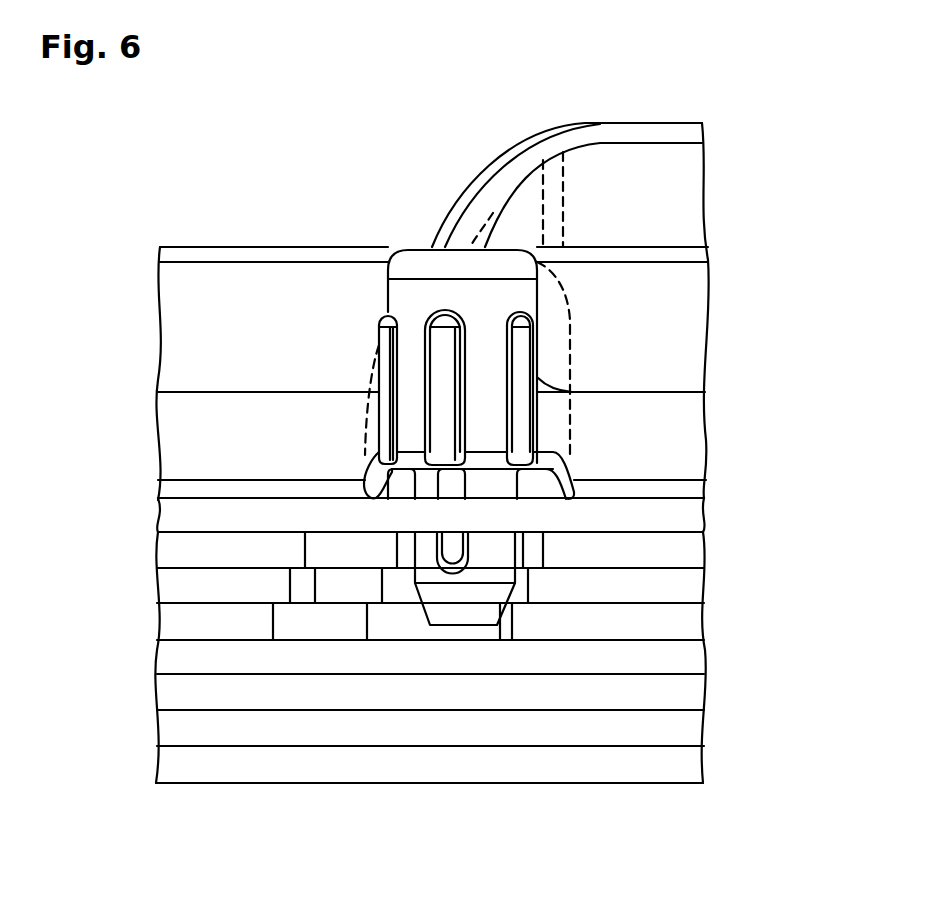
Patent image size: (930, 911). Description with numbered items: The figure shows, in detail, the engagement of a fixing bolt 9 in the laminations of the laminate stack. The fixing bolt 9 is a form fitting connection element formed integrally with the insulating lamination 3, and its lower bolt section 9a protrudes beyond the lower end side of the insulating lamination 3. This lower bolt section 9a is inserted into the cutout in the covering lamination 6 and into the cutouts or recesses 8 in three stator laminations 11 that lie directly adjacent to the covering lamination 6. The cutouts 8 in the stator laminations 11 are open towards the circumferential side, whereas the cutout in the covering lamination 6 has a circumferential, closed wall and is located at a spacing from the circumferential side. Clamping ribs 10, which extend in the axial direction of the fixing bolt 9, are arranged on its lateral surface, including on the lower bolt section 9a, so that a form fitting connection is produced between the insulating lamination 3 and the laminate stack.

The insulating lamination 3 is at (237, 253).
The covering lamination 6 is at (182, 511).
The cutouts or recesses 8 is at (403, 621).
The fixing bolt 9 is at (374, 305).
The lower bolt section 9a is at (503, 293).
The clamping ribs 10 is at (445, 408).
The stator laminations 11 is at (172, 550).